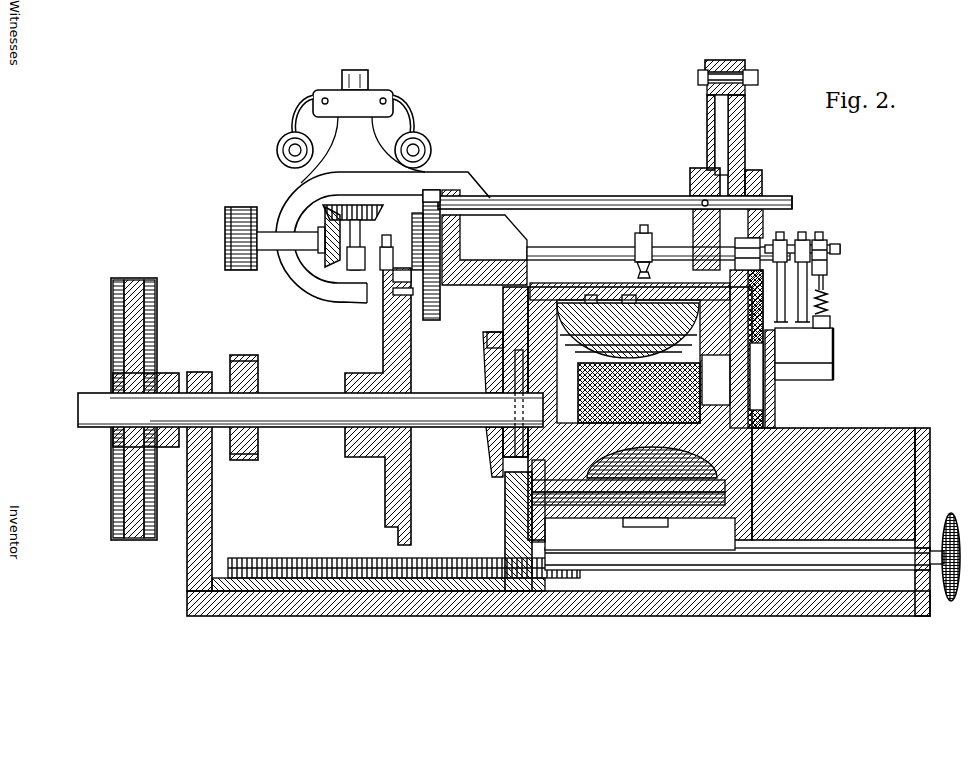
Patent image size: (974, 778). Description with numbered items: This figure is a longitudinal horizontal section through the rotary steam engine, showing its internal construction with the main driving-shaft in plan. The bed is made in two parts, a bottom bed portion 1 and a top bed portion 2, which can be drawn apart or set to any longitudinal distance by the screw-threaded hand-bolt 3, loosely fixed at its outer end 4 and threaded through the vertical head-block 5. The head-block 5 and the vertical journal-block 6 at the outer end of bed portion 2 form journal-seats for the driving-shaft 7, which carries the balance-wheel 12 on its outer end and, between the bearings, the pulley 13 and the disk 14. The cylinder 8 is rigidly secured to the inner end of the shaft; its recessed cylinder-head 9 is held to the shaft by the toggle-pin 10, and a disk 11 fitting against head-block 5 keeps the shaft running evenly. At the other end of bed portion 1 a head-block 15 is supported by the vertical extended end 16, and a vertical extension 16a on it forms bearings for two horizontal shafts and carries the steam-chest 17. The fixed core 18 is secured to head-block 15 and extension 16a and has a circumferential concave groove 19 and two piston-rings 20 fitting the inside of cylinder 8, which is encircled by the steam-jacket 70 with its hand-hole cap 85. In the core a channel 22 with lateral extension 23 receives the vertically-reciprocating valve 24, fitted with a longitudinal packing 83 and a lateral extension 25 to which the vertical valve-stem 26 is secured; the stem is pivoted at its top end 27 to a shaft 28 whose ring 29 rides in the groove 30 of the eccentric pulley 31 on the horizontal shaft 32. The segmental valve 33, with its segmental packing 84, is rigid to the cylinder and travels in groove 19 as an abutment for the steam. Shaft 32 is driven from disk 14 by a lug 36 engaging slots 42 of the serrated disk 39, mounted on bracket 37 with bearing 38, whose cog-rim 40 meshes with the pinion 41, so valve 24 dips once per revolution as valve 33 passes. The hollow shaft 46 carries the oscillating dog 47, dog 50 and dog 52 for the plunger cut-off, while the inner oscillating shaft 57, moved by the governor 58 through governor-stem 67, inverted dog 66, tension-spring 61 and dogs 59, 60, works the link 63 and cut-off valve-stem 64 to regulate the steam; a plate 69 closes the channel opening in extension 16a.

The bottom bed portion 1 is at (585, 613).
The top bed portion 2 is at (303, 580).
The screw-threaded hand-bolt 3 is at (728, 576).
The outer end fixing of hand-bolt 4 is at (931, 575).
The vertical head-block 5 is at (503, 512).
The vertical journal-block 6 is at (192, 538).
The driving-shaft 7 is at (88, 408).
The cylinder 8 is at (603, 481).
The cylinder-head 9 is at (503, 447).
The toggle-pin 10 is at (484, 366).
The disk 11 is at (490, 333).
The balance-wheel 12 is at (113, 336).
The pulley 13 is at (233, 357).
The disk 14 is at (385, 335).
The head-block 15 is at (850, 437).
The vertical extended end 16 is at (930, 470).
The vertical extension 16a is at (764, 182).
The steam-chest 17 is at (835, 346).
The core 18 is at (505, 472).
The circumferential concave groove 19 is at (640, 534).
The circumferential piston-rings 20 is at (505, 306).
The channel or mortise 22 is at (730, 379).
The lateral extension of channel 23 is at (760, 384).
The vertically-reciprocating valve 24 is at (578, 385).
The lateral extension of valve 25 is at (775, 410).
The vertical valve-stem 26 is at (745, 133).
The top end of valve-stem 27 is at (722, 61).
The shaft 28 is at (707, 104).
The ring 29 is at (710, 174).
The circumferential groove 30 is at (713, 177).
The eccentrically-rotating pulley 31 is at (693, 195).
The horizontal shaft 32 is at (793, 204).
The segmental valve 33 is at (607, 312).
The extended lug 36 is at (375, 298).
The bracket 37 is at (463, 226).
The bearing 38 is at (458, 200).
The serrated grooved-face disk 39 is at (420, 190).
The cog-rim 40 is at (460, 238).
The pinion 41 is at (438, 200).
The slots 42 is at (397, 300).
The hollow shaft 46 is at (565, 250).
The oscillating dog 47 is at (787, 238).
The dog 50 is at (652, 238).
The dog 52 is at (380, 262).
The oscillating shaft 57 is at (842, 252).
The governor 58 is at (352, 69).
The oscillating dog 59 is at (832, 248).
The oscillating dog 60 is at (815, 238).
The coil tension-spring 61 is at (828, 293).
The depending link 63 is at (823, 273).
The vertical cut-off valve-stem 64 is at (830, 318).
The inverted dog 66 is at (345, 265).
The governor-stem 67 is at (364, 235).
The plate 69 is at (833, 363).
The steam-jacket 70 is at (600, 481).
The spring-actuated longitudinal packing 83 is at (590, 298).
The segmental packing 84 is at (630, 300).
The cap 85 is at (620, 305).